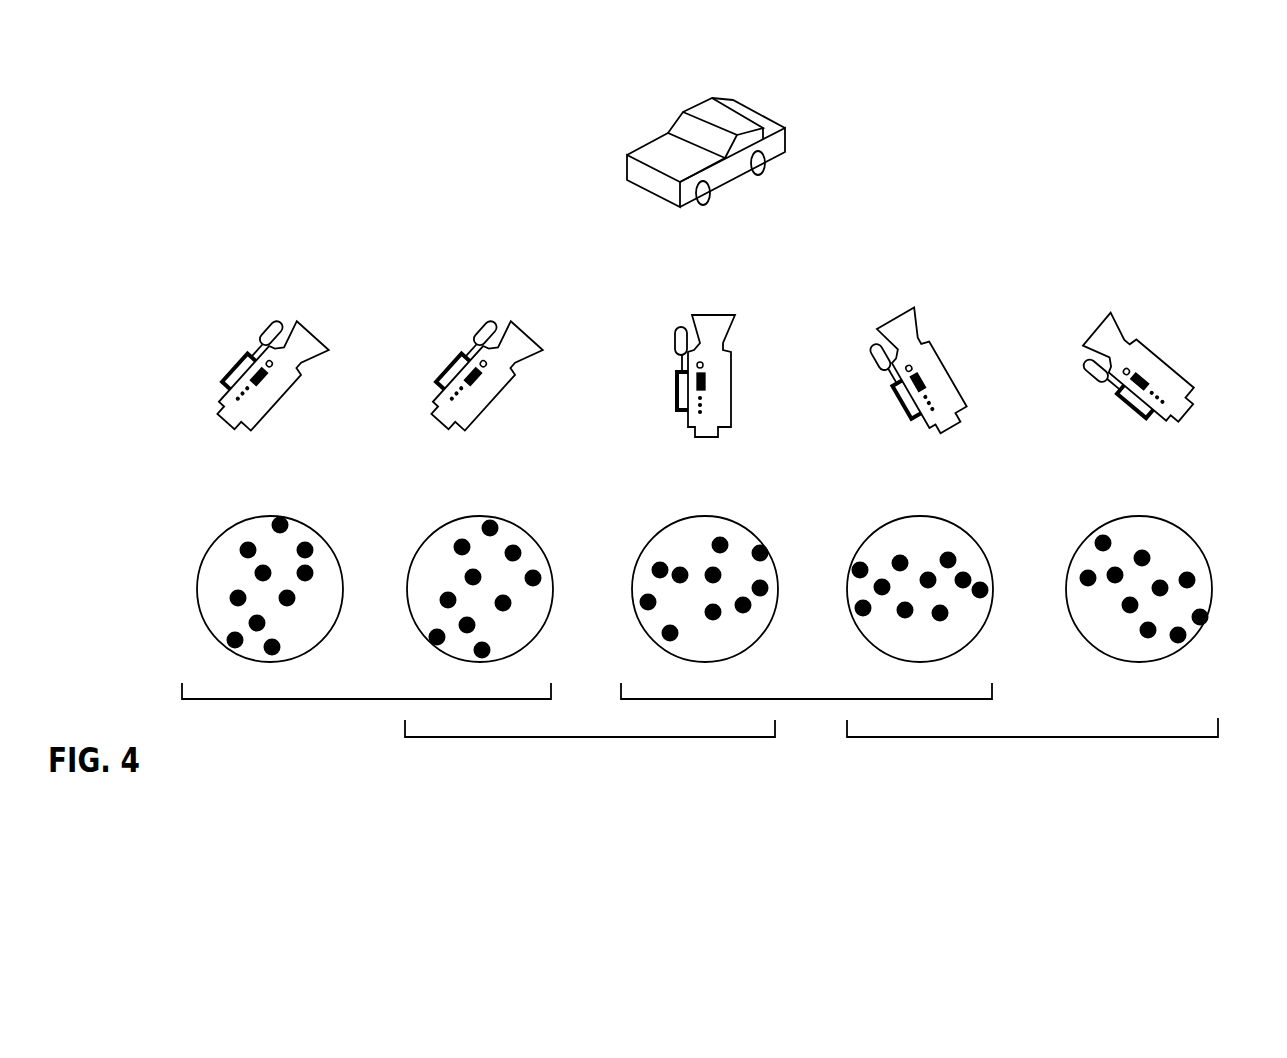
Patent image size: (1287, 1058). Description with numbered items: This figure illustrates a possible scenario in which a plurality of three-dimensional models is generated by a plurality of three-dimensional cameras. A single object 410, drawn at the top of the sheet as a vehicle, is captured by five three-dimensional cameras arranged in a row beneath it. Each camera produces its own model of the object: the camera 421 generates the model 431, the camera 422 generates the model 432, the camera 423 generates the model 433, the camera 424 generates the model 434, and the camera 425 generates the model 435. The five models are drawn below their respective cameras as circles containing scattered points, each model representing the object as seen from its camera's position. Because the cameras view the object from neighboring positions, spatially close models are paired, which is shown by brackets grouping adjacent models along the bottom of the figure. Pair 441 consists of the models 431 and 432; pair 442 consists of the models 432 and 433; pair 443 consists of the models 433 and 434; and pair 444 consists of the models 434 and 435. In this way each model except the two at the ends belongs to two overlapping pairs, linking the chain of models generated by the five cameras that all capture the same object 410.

The object 410 is at (722, 100).
The 3D camera 421 is at (1158, 358).
The 3D camera 422 is at (945, 365).
The 3D camera 423 is at (728, 365).
The 3D camera 424 is at (507, 387).
The 3D camera 425 is at (293, 387).
The 3D model 431 is at (1191, 540).
The 3D model 432 is at (970, 540).
The 3D model 433 is at (755, 540).
The 3D model 434 is at (528, 540).
The 3D model 435 is at (318, 540).
The pair 441 is at (1030, 737).
The pair 442 is at (803, 699).
The pair 443 is at (587, 737).
The pair 444 is at (363, 699).